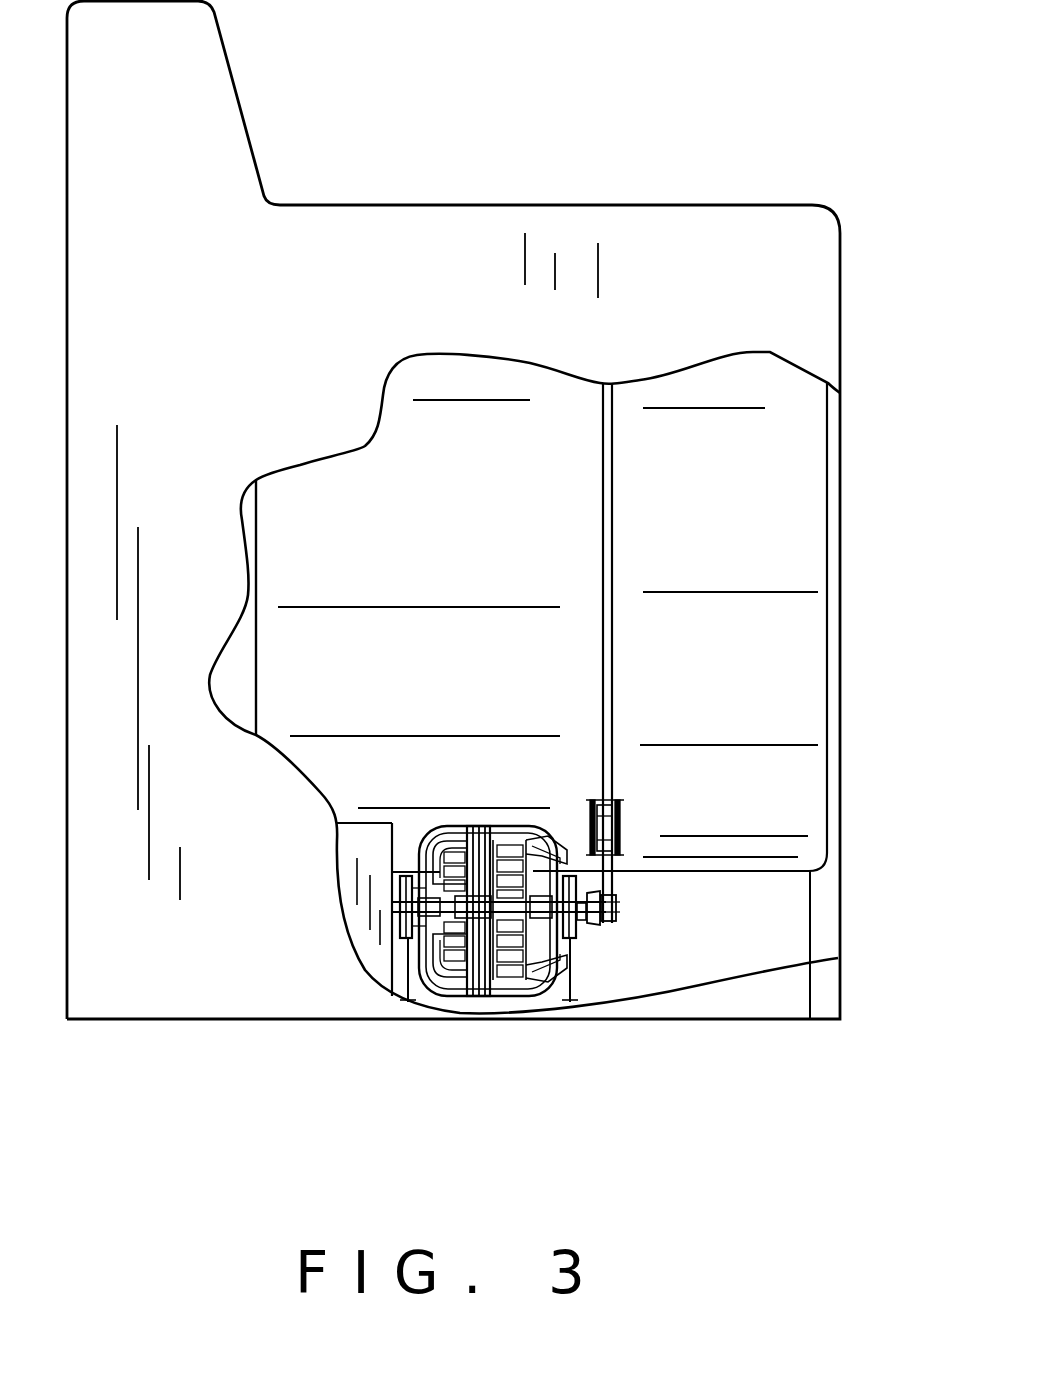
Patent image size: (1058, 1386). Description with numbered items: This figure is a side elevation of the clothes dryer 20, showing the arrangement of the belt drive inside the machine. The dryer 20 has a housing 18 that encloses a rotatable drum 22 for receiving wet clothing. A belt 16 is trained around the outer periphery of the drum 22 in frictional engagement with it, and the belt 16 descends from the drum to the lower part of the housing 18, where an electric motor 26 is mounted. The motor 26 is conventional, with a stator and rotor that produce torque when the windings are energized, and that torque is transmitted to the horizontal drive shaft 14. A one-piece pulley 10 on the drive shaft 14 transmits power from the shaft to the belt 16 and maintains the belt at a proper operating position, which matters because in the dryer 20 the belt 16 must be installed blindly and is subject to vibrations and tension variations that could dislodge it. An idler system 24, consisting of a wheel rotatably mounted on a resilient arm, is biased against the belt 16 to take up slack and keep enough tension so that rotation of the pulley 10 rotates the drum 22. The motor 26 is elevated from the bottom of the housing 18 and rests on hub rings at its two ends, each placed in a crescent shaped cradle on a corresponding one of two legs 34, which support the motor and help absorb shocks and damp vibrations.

The pulley 10 is at (614, 913).
The drive shaft 14 is at (580, 915).
The belt 16 is at (613, 688).
The housing 18 is at (578, 203).
The dryer 20 is at (705, 185).
The drum 22 is at (755, 872).
The idler system 24 is at (620, 823).
The electric motor 26 is at (470, 826).
The legs 34 is at (405, 975).